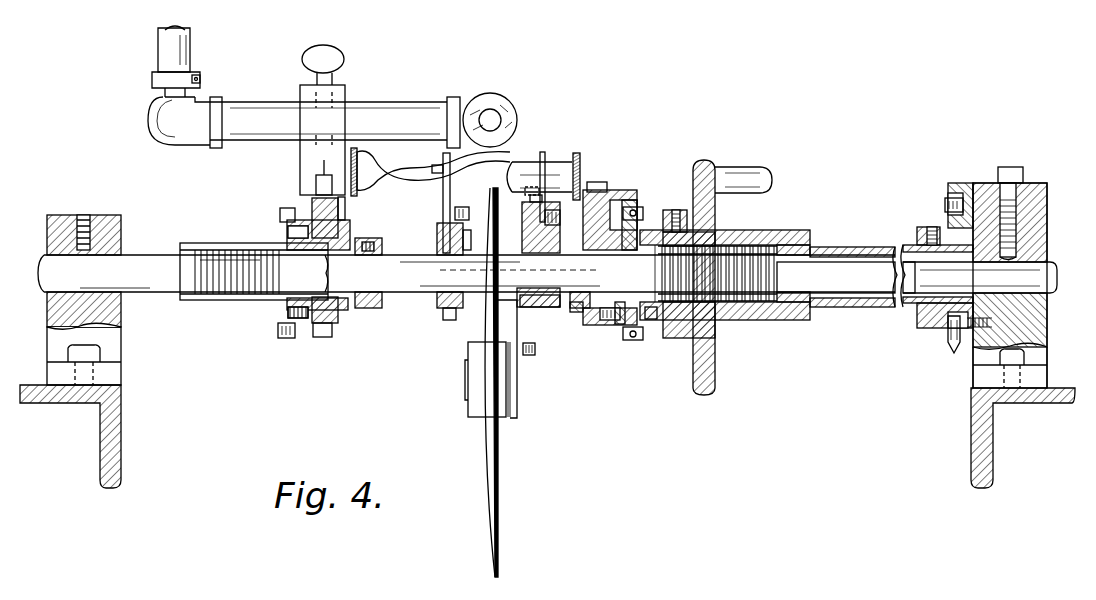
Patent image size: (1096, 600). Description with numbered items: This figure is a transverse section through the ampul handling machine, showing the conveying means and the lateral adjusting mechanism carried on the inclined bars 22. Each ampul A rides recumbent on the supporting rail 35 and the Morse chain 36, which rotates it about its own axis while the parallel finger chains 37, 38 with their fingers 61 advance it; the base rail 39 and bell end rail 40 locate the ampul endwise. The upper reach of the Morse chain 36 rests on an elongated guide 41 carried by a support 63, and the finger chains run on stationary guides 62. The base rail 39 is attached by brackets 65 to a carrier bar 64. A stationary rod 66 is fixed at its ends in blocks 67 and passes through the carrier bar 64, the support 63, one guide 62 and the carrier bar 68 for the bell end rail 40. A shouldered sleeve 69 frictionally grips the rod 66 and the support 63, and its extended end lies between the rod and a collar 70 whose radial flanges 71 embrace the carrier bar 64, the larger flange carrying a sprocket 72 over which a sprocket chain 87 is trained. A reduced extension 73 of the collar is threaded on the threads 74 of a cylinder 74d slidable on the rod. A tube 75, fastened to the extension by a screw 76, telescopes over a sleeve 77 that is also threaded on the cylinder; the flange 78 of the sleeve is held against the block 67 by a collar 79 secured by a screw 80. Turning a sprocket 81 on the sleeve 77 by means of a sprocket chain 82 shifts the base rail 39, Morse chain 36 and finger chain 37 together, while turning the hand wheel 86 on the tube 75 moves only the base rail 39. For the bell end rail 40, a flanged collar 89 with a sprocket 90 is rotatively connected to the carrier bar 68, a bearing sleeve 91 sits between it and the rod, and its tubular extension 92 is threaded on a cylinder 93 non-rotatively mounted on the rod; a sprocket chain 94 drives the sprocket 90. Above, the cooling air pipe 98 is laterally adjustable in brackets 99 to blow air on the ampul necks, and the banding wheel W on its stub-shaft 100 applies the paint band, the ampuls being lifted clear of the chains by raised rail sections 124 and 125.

The inclined bars 22 is at (115, 440).
The rail 35 is at (443, 205).
The Morse chain 36 is at (525, 205).
The finger chain 37 is at (560, 222).
The finger chain 38 is at (469, 210).
The base rail 39 is at (580, 160).
The bell end rail 40 is at (358, 160).
The guide 41 is at (530, 225).
The fingers 61 is at (545, 152).
The guides 62 is at (447, 238).
The support 63 is at (540, 310).
The carrier bar 64 is at (632, 195).
The brackets 65 is at (580, 168).
The rod 66 is at (878, 262).
The blocks 67 is at (55, 303).
The carrier bar 68 is at (332, 330).
The shouldered sleeve 69 is at (518, 305).
The collar 70 is at (600, 325).
The radial flanges 71 is at (576, 312).
The sprocket 72 is at (636, 340).
The reduced extension 73 is at (648, 240).
The screw threads 74 is at (770, 256).
The cylinder 74d is at (808, 273).
The tube 75 is at (762, 230).
The screw 76 is at (652, 320).
The sleeve 77 is at (835, 245).
The flange 78 is at (968, 252).
The collar 79 is at (968, 232).
The screw 80 is at (955, 328).
The sprocket 81 is at (953, 355).
The sprocket chain 82 is at (945, 204).
The hand wheel 86 is at (715, 366).
The sprocket chain 87 is at (643, 222).
The flanged collar 89 is at (338, 312).
The sprocket 90 is at (287, 338).
The bearing sleeve 91 is at (382, 304).
The tubular extension 92 is at (268, 243).
The cylinder 93 is at (200, 273).
The sprocket chain 94 is at (280, 204).
The cooling air pipe 98 is at (500, 110).
The brackets 99 is at (340, 95).
The stub-shaft 100 is at (462, 388).
The raised rail section 124 is at (600, 200).
The rail section 125 is at (430, 162).
The ampul A is at (402, 194).
The banding wheel W is at (499, 498).